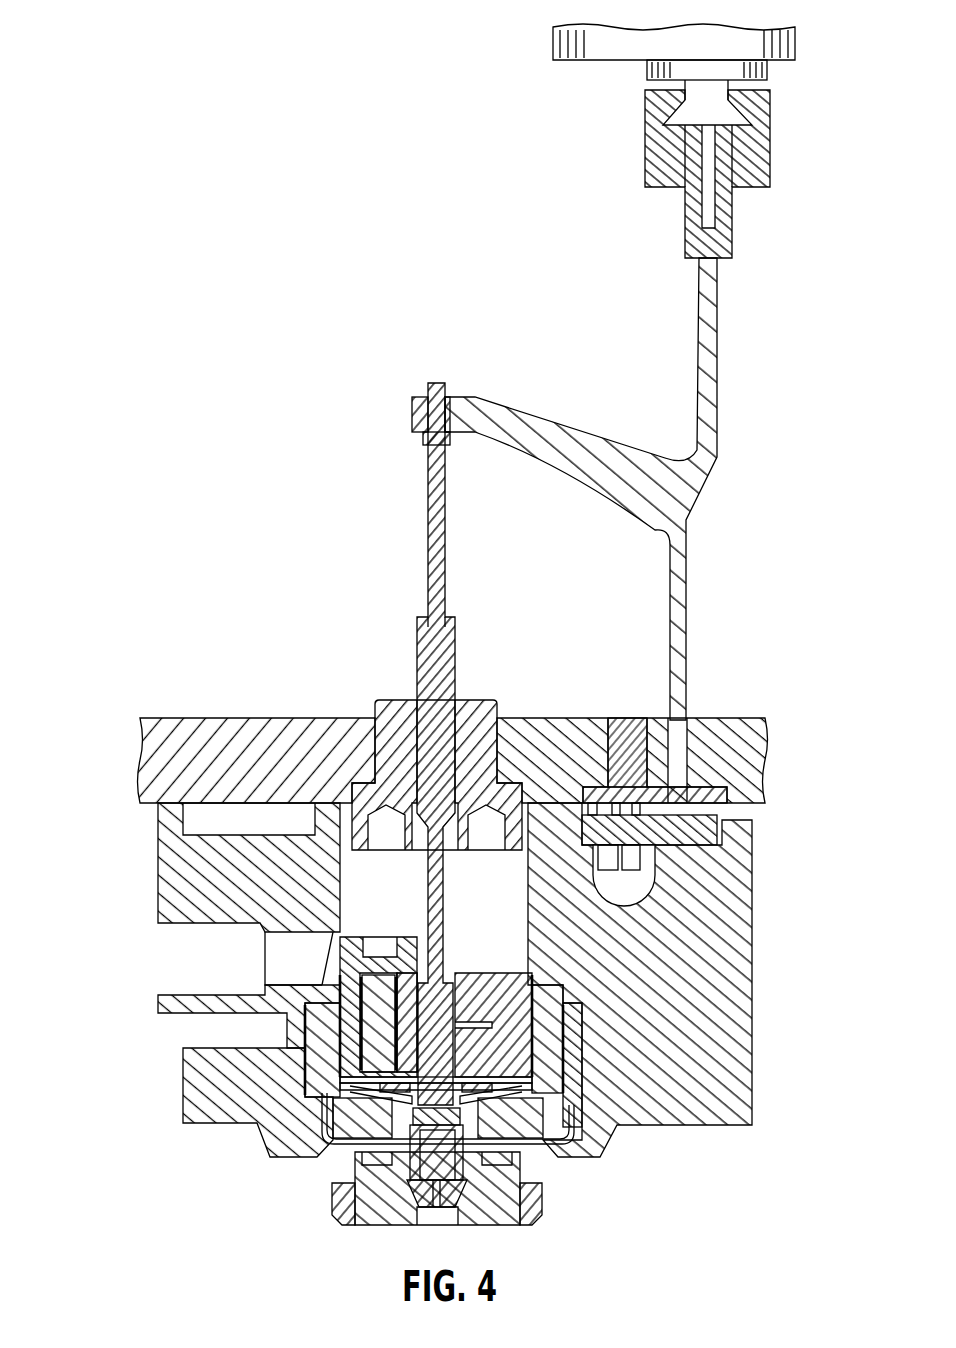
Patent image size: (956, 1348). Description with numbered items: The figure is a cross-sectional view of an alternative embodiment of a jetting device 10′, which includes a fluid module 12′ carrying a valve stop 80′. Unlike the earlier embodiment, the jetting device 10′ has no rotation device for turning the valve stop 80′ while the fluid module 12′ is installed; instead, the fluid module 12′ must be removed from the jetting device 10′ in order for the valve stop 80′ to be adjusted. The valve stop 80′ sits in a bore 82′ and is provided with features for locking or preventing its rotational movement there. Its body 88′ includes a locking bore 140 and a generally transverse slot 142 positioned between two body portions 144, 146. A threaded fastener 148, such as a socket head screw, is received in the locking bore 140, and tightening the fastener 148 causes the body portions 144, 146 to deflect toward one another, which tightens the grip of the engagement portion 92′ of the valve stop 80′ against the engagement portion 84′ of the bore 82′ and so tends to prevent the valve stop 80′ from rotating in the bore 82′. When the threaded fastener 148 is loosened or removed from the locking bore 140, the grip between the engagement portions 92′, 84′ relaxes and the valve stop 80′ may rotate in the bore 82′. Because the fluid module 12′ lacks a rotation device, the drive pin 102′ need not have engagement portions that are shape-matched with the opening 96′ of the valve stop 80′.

The jetting device 10′ is at (178, 369).
The fluid module 12′ is at (94, 898).
The drive pin 102′ is at (425, 668).
The bore 82′ is at (343, 859).
The valve stop 80′ is at (478, 970).
The engagement portion 84′ is at (513, 983).
The opening 96′ is at (445, 1006).
The body 88′ is at (505, 1060).
The engagement portion 92′ is at (532, 1038).
The locking bore 140 is at (386, 962).
The transverse slot 142 is at (357, 1026).
The body portion 144 is at (338, 988).
The body portion 146 is at (352, 1052).
The threaded fastener 148 is at (347, 952).